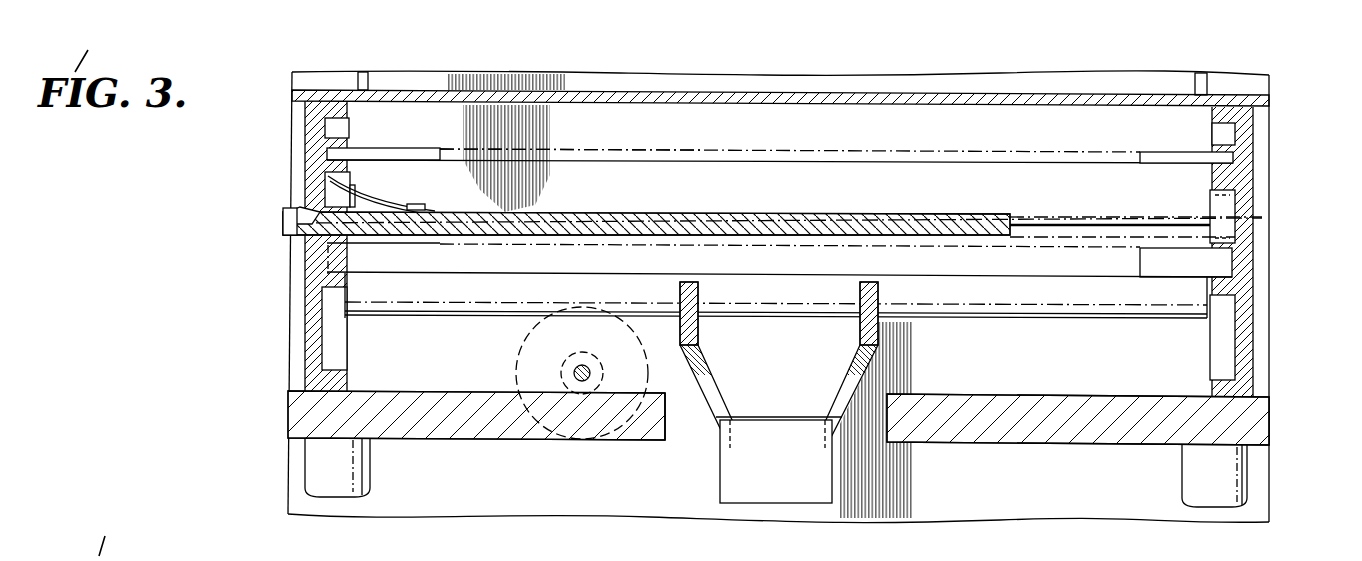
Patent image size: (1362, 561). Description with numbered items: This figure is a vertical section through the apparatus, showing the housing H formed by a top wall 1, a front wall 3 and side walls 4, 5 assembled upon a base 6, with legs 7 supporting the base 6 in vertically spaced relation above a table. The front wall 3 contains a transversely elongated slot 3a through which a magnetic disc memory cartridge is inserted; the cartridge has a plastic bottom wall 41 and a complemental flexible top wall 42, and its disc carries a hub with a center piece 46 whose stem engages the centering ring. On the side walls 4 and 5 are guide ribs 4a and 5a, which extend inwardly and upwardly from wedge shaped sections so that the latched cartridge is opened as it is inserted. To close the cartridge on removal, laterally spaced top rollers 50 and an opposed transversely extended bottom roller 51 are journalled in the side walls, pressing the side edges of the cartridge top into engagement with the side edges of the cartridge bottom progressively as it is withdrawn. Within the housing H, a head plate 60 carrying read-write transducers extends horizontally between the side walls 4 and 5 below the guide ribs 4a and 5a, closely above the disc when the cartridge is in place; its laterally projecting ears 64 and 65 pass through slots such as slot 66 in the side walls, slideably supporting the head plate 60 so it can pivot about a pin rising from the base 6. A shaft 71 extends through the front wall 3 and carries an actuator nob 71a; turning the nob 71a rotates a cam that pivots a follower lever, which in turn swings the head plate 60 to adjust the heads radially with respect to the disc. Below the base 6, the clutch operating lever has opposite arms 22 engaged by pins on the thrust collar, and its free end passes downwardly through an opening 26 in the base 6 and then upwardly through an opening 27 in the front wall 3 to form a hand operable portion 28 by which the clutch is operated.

The top wall 1 is at (862, 100).
The front wall 3 is at (1020, 130).
The transversely elongated slot 3a is at (1058, 226).
The side wall 4 is at (1245, 150).
The guide rib 4a is at (1215, 170).
The side wall 5 is at (307, 132).
The guide rib 5a is at (350, 170).
The base 6 is at (290, 398).
The legs 7 is at (325, 460).
The arms 22 is at (873, 298).
The opening 26 is at (672, 440).
The opening 27 is at (812, 498).
The hand operable portion 28 is at (762, 445).
The bottom wall 41 is at (1232, 268).
The flexible top wall 42 is at (622, 150).
The center piece 46 is at (1230, 240).
The top rollers 50 is at (355, 206).
The bottom roller 51 is at (776, 295).
The head plate 60 is at (730, 218).
The ear 64 is at (284, 226).
The ear 65 is at (1270, 217).
The slot 66 is at (290, 212).
The shaft 71 is at (586, 364).
The actuator nob 71a is at (515, 368).
The housing H is at (1286, 94).